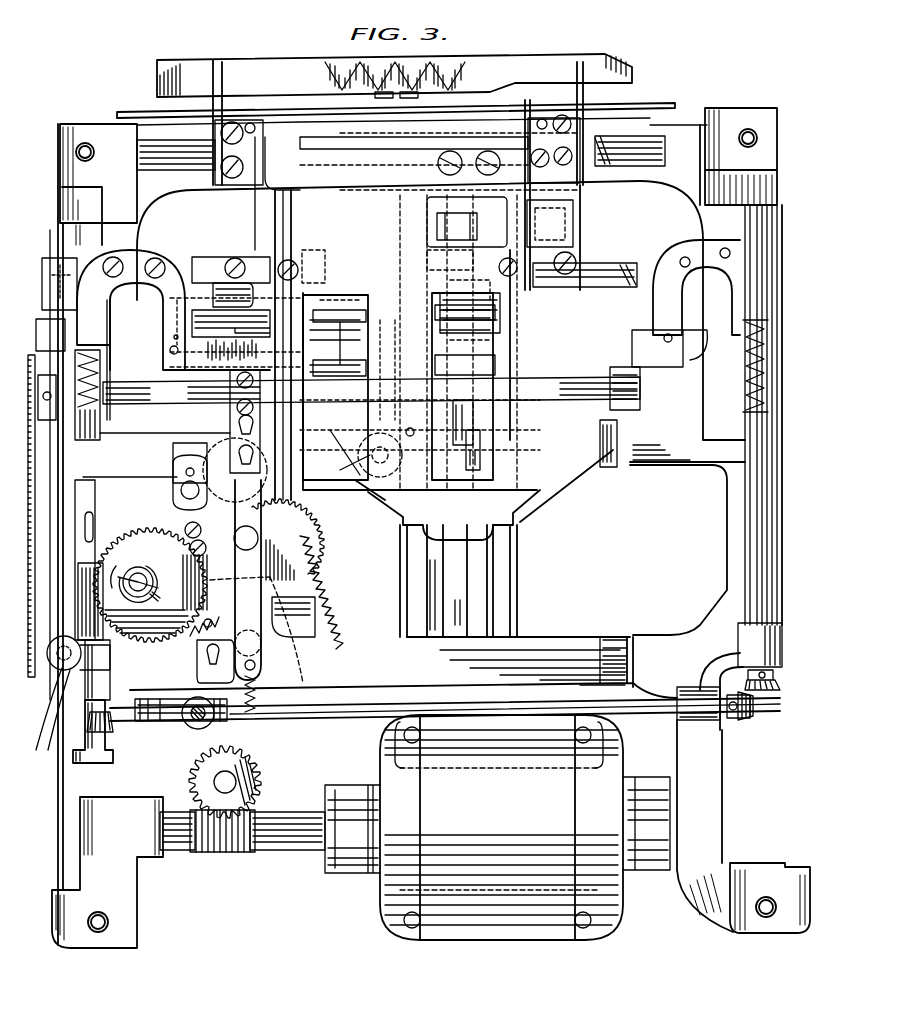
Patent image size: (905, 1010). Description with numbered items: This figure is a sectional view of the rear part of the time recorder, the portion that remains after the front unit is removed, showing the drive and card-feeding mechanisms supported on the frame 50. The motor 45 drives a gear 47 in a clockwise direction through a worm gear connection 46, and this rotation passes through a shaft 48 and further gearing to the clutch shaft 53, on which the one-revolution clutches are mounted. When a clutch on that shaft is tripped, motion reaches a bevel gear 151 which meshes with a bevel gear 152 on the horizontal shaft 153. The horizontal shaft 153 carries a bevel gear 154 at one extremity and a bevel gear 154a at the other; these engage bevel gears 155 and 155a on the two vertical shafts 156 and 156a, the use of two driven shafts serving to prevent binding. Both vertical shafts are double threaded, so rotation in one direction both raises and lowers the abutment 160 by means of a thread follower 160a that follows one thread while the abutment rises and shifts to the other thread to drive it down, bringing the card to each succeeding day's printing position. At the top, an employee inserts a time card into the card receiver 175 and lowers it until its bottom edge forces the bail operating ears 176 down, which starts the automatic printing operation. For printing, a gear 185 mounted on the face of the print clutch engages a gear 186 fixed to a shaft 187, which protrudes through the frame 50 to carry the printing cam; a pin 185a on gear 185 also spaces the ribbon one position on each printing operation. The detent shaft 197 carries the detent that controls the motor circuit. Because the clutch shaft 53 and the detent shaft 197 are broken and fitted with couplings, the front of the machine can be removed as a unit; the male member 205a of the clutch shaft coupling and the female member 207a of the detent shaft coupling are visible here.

The card receiver 175 is at (462, 64).
The thread follower 160a is at (776, 436).
The abutment 160 is at (172, 353).
The bail operating ears 176 is at (440, 310).
The vertical shaft 156a is at (745, 407).
The vertical shaft 156 is at (100, 432).
The supporting frame 50 is at (672, 440).
The gear 185 is at (170, 524).
The shaft 187 is at (240, 540).
The pin 185a is at (126, 567).
The clutch shaft 53 is at (153, 585).
The male member 205a is at (150, 602).
The gear 186 is at (324, 568).
The detent shaft 197 is at (60, 636).
The bevel gear 152 is at (252, 690).
The female member 207a is at (46, 709).
The bevel gear 155 is at (78, 715).
The bevel gear 154 is at (110, 726).
The bevel gear 151 is at (181, 730).
The shaft 48 is at (222, 781).
The gear 47 is at (247, 788).
The worm gear connection 46 is at (216, 852).
The motor 45 is at (440, 830).
The horizontal shaft 153 is at (364, 724).
The bevel gear 155a is at (773, 690).
The bevel gear 154a is at (742, 720).